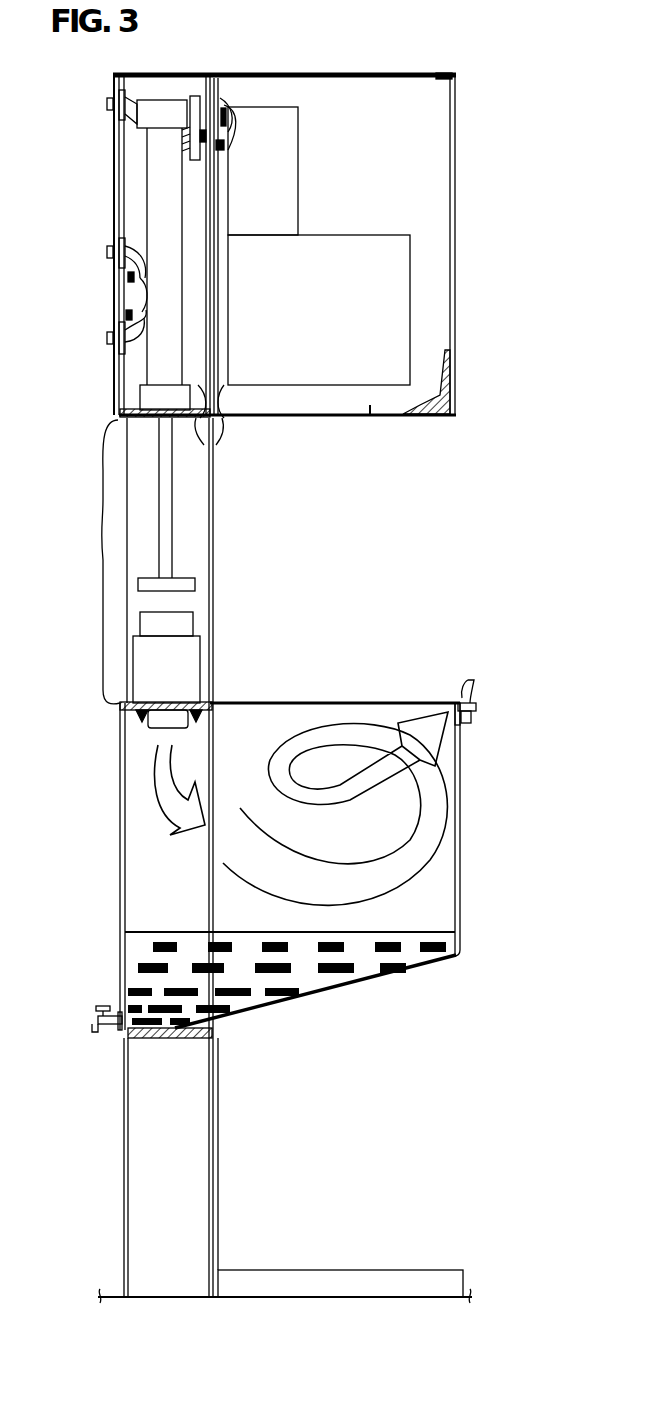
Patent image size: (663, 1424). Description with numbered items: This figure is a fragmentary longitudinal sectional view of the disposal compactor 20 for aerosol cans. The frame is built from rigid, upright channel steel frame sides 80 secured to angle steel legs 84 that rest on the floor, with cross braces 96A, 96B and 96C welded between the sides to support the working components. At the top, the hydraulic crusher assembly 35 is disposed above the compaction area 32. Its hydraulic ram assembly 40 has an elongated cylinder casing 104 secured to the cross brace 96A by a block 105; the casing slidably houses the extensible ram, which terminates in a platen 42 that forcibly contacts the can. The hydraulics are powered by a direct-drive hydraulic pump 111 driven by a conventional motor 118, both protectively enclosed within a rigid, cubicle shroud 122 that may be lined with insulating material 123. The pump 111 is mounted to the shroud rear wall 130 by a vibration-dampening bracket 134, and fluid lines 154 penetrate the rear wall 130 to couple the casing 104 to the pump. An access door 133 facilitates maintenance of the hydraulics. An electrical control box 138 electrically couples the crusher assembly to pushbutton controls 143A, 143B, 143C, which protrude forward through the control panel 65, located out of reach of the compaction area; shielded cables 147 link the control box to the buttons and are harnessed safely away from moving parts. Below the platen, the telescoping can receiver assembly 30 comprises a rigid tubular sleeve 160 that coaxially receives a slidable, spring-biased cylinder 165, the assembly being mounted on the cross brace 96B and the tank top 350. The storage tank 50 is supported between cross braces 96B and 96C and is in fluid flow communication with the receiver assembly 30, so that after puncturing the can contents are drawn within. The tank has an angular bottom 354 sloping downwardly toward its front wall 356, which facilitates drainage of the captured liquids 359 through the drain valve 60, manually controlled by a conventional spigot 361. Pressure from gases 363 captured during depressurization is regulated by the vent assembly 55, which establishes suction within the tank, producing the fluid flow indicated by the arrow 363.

The disposal compactor 20 is at (86, 64).
The crusher assembly 35 is at (332, 68).
The access door 133 is at (455, 104).
The control panel 65 is at (112, 205).
The motor 118 is at (282, 150).
The hydraulic pump 111 is at (285, 232).
The rear wall 130 is at (208, 84).
The vibration-dampening bracket 134 is at (222, 195).
The pushbutton control 143B is at (112, 107).
The cylinder casing 104 is at (155, 142).
The electrical control box 138 is at (197, 158).
The pushbutton control 143A is at (107, 254).
The cables 147 is at (148, 284).
The pushbutton control 143C is at (108, 340).
The block 105 is at (155, 395).
The cross brace 96A is at (120, 414).
The fluid lines 154 is at (208, 418).
The shroud 122 is at (370, 425).
The insulating material 123 is at (430, 425).
The compaction area 32 is at (103, 500).
The hydraulic ram assembly 40 is at (165, 456).
The platen 42 is at (145, 582).
The spring-biased cylinder 165 is at (186, 624).
The tubular sleeve 160 is at (178, 668).
The telescoping can receiver assembly 30 is at (118, 660).
The cross brace 96B is at (118, 712).
The tank top 350 is at (340, 703).
The vent assembly 55 is at (456, 660).
The storage tank 50 is at (108, 810).
The front wall 356 is at (120, 845).
The gasses / fluid flow arrow 363 is at (322, 798).
The captured liquids 359 is at (288, 932).
The angular bottom 354 is at (315, 998).
The spigot 361 is at (100, 1005).
The drain valve 60 is at (92, 1022).
The cross brace 96C is at (180, 1038).
The frame sides 80 is at (189, 1136).
The legs 84 is at (355, 1272).